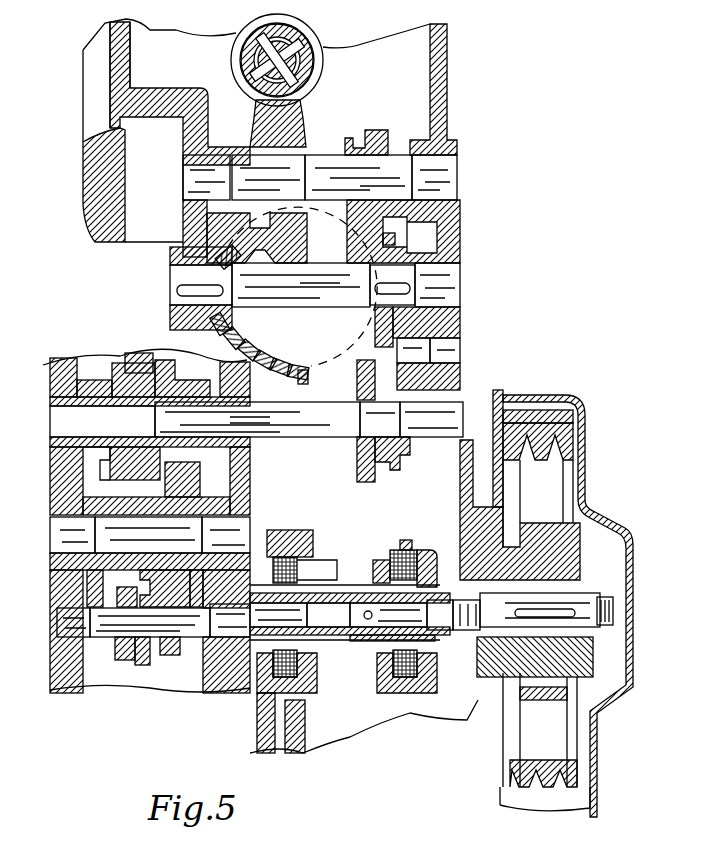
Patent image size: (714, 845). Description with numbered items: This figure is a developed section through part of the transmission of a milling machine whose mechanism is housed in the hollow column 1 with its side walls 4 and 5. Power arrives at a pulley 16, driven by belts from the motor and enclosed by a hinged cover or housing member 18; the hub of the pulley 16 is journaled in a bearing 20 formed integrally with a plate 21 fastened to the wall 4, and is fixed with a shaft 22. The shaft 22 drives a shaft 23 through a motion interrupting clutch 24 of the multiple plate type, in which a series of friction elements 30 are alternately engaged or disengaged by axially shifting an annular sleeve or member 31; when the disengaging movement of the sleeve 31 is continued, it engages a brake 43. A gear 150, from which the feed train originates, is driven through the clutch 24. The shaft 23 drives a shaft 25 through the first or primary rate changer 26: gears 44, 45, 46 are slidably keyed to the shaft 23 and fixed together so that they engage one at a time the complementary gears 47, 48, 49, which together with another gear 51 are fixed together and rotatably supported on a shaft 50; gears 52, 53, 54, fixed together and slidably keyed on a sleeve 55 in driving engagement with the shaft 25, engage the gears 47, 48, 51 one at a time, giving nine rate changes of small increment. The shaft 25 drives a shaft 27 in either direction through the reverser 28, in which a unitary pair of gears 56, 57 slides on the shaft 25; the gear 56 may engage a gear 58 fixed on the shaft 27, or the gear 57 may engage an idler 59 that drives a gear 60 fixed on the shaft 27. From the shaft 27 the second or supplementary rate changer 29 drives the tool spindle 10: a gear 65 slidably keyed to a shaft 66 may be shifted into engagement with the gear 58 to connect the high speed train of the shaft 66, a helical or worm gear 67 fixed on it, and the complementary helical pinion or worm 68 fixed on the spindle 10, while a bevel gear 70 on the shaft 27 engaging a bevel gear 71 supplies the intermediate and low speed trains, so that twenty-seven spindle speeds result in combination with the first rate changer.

The hollow column 1 is at (433, 243).
The side wall 4 is at (446, 110).
The side wall 5 is at (88, 168).
The tool spindle 10 is at (285, 28).
The pulley 16 is at (560, 450).
The cover or housing member 18 is at (634, 614).
The bearing 20 is at (533, 680).
The plate 21 is at (490, 650).
The shaft 22 is at (470, 640).
The shaft 23 is at (197, 640).
The motion interrupting clutch 24 is at (395, 685).
The shaft 25 is at (308, 438).
The first or primary rate changer 26 is at (95, 555).
The shaft 27 is at (460, 283).
The reverser 28 is at (372, 370).
The second or supplementary rate changer 29 is at (235, 228).
The friction elements 30 is at (400, 550).
The annular sleeve or member 31 is at (370, 645).
The brake 43 is at (312, 680).
The gear 44 is at (125, 662).
The gear 45 is at (142, 668).
The gear 46 is at (172, 656).
The gear 47 is at (60, 605).
The gear 48 is at (145, 588).
The gear 49 is at (275, 545).
The shaft 50 is at (52, 530).
The gear 51 is at (188, 480).
The gear 52 is at (118, 366).
The gear 53 is at (138, 356).
The gear 54 is at (180, 382).
The sleeve 55 is at (96, 395).
The gear 56 is at (364, 482).
The gear 57 is at (404, 466).
The gear 58 is at (375, 332).
The idler 59 is at (428, 368).
The gear 60 is at (396, 242).
The gear 65 is at (378, 132).
The shaft 66 is at (455, 175).
The helical or worm gear 67 is at (298, 108).
The helical pinion or worm 68 is at (290, 64).
The bevel gear 70 is at (222, 330).
The bevel gear 71 is at (300, 376).
The gear 150 is at (212, 640).